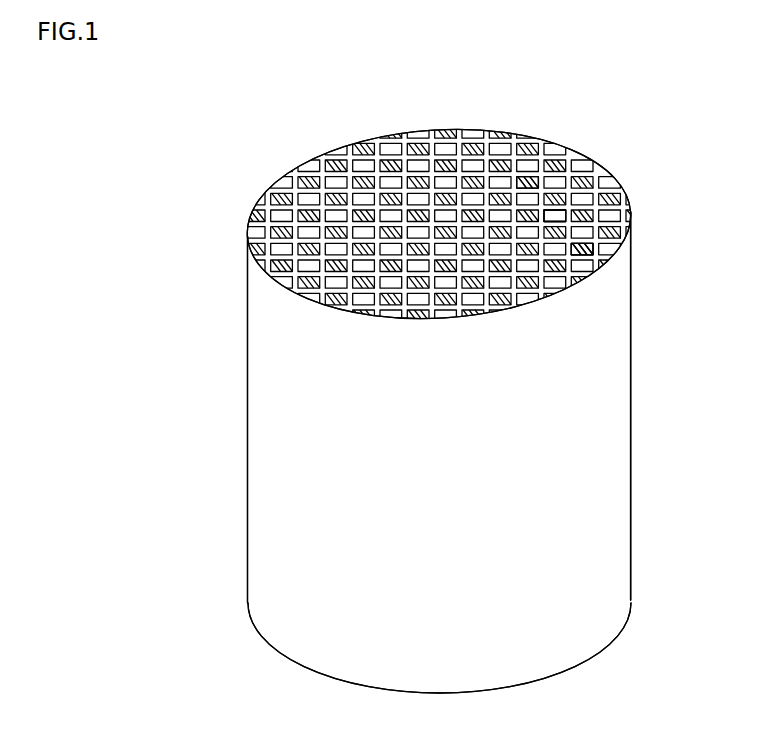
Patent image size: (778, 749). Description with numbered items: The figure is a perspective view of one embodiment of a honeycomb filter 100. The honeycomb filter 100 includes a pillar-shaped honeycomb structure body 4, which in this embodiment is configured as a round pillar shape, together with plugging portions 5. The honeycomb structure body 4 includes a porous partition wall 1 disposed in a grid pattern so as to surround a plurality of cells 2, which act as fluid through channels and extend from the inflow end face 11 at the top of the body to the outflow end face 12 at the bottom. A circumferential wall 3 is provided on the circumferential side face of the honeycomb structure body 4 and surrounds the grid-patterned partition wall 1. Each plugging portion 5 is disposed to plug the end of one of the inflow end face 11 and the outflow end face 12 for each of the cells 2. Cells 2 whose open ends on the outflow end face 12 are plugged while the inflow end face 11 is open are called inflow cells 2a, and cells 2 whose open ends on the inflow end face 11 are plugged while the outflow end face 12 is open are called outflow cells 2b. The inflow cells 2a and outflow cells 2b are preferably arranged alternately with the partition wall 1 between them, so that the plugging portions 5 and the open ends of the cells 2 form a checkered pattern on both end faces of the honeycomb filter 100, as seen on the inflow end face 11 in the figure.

The honeycomb filter 100 is at (729, 72).
The partition wall 1 is at (538, 190).
The cell 2 is at (568, 232).
The inflow cell 2a is at (553, 216).
The outflow cell 2b is at (593, 243).
The circumferential wall 3 is at (600, 352).
The honeycomb structure body 4 is at (639, 259).
The plugging portion 5 is at (484, 178).
The inflow end face 11 is at (319, 144).
The outflow end face 12 is at (273, 666).